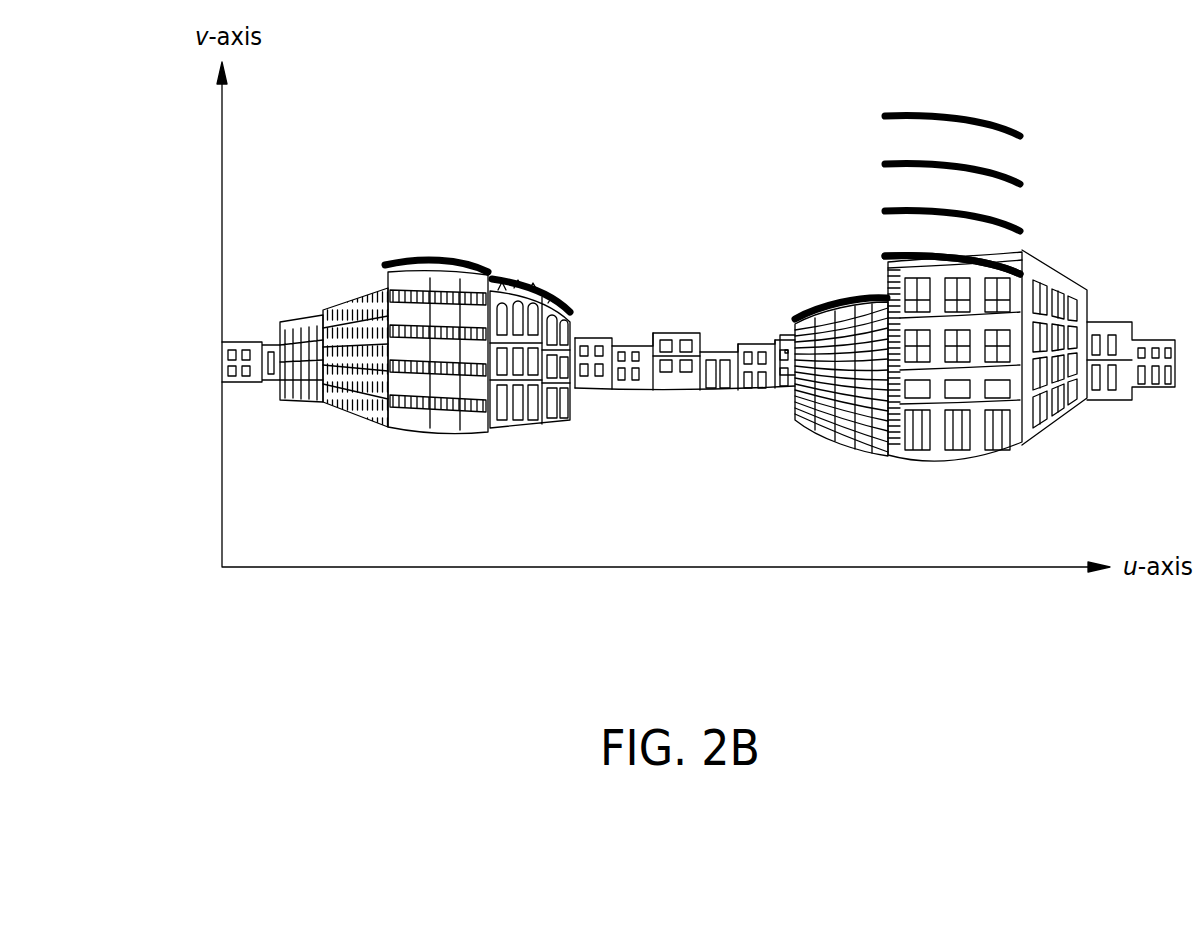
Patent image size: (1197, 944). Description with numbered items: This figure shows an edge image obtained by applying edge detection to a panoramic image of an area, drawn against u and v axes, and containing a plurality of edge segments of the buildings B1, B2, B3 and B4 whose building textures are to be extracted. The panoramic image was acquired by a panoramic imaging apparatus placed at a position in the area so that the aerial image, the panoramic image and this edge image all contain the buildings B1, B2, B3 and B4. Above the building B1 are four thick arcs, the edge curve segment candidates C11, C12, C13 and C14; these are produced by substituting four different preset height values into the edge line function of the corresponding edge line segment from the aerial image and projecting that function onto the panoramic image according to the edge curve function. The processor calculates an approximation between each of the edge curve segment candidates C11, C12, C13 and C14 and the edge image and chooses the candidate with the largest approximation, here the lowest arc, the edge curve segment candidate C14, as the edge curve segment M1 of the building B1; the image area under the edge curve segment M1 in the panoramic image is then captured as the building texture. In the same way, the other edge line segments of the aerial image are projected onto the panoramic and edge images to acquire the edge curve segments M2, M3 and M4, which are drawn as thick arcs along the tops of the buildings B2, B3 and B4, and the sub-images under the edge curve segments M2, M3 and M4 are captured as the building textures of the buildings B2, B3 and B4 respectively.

The edge curve segment candidate C11 is at (922, 122).
The edge curve segment candidate C12 is at (922, 170).
The edge curve segment candidate C13 is at (922, 217).
The edge curve segment candidate C14 is at (952, 265).
The edge curve segment M1 is at (895, 260).
The edge curve segment M2 is at (819, 311).
The edge curve segment M3 is at (553, 295).
The edge curve segment M4 is at (410, 273).
The building B1 is at (987, 376).
The building B2 is at (834, 392).
The building B3 is at (530, 371).
The building B4 is at (405, 366).